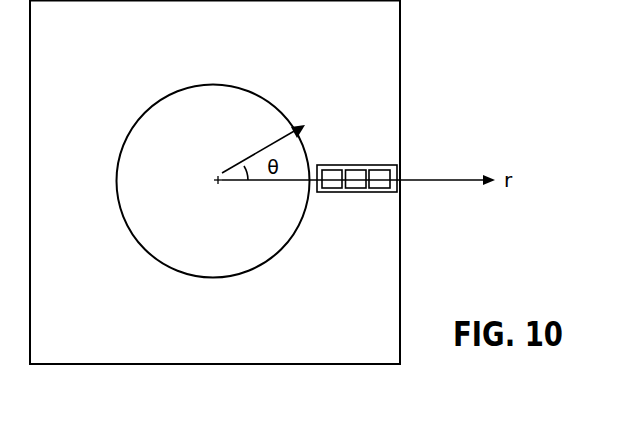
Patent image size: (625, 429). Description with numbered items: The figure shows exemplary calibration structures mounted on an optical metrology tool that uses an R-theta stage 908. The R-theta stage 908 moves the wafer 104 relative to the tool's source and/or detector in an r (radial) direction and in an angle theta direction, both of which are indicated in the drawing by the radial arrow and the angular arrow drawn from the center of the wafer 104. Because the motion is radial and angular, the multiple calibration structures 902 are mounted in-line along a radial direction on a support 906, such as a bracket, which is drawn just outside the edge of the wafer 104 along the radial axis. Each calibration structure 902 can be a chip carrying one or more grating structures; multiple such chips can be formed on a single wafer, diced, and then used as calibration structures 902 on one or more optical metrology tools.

The R-theta stage 908 is at (88, 72).
The wafer 104 is at (200, 216).
The support 906 is at (327, 192).
The calibration structures 902 is at (331, 170).